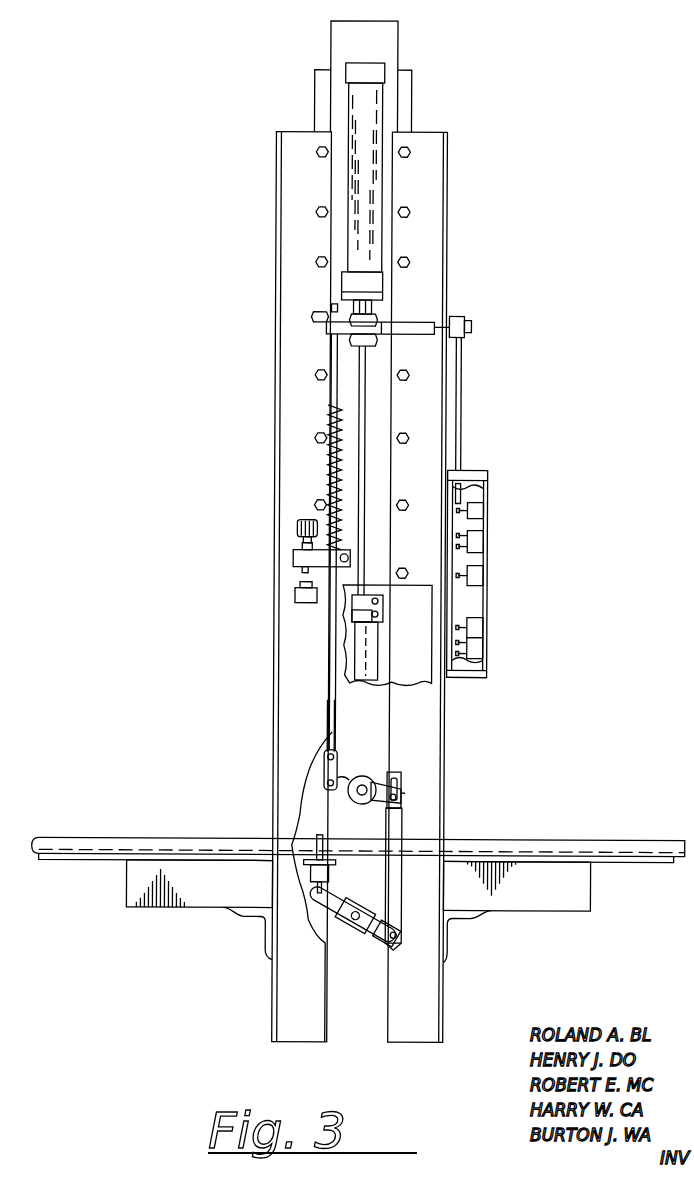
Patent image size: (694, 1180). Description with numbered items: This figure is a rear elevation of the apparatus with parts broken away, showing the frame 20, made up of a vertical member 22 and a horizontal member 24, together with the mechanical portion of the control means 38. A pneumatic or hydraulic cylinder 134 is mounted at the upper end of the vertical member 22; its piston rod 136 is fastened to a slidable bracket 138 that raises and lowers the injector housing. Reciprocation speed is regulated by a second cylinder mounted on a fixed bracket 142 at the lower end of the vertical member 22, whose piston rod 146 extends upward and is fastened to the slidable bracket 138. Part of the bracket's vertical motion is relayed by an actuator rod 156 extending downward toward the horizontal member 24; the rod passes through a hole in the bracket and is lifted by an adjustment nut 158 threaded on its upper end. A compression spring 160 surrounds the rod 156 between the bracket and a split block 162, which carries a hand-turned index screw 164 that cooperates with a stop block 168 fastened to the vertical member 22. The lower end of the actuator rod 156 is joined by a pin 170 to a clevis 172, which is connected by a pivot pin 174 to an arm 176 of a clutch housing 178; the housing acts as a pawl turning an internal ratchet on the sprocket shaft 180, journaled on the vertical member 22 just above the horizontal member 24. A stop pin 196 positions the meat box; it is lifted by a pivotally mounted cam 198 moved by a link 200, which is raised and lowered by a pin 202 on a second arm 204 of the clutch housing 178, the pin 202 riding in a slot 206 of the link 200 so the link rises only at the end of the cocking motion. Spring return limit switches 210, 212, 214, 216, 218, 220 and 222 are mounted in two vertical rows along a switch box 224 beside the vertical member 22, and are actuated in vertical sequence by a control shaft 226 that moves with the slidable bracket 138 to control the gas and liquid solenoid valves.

The frame 20 is at (553, 913).
The vertical member 22 is at (274, 384).
The horizontal member 24 is at (593, 887).
The control means 38 is at (490, 472).
The cylinder 134 is at (382, 110).
The piston rod 136 is at (372, 306).
The slidable bracket 138 is at (432, 325).
The fixed bracket 142 is at (378, 640).
The piston rod 146 is at (365, 404).
The actuator rod 156 is at (330, 666).
The adjustment nut 158 is at (325, 320).
The compression spring 160 is at (330, 482).
The split block 162 is at (293, 558).
The index screw 164 is at (297, 527).
The stop block 168 is at (295, 596).
The pin 170 is at (328, 753).
The clevis 172 is at (324, 760).
The pivot pin 174 is at (345, 780).
The arm 176 is at (356, 796).
The clutch housing 178 is at (358, 800).
The sprocket shaft 180 is at (380, 750).
The stop pin 196 is at (325, 845).
The cam 198 is at (358, 920).
The link 200 is at (405, 922).
The pin 202 is at (406, 808).
The second arm 204 is at (406, 794).
The slot 206 is at (402, 780).
The limit switch 210 is at (480, 510).
The limit switch 212 is at (475, 531).
The limit switch 214 is at (481, 641).
The limit switch 216 is at (483, 655).
The limit switch 218 is at (483, 626).
The limit switch 220 is at (483, 576).
The limit switch 222 is at (483, 544).
The switch box 224 is at (487, 674).
The control shaft 226 is at (461, 373).